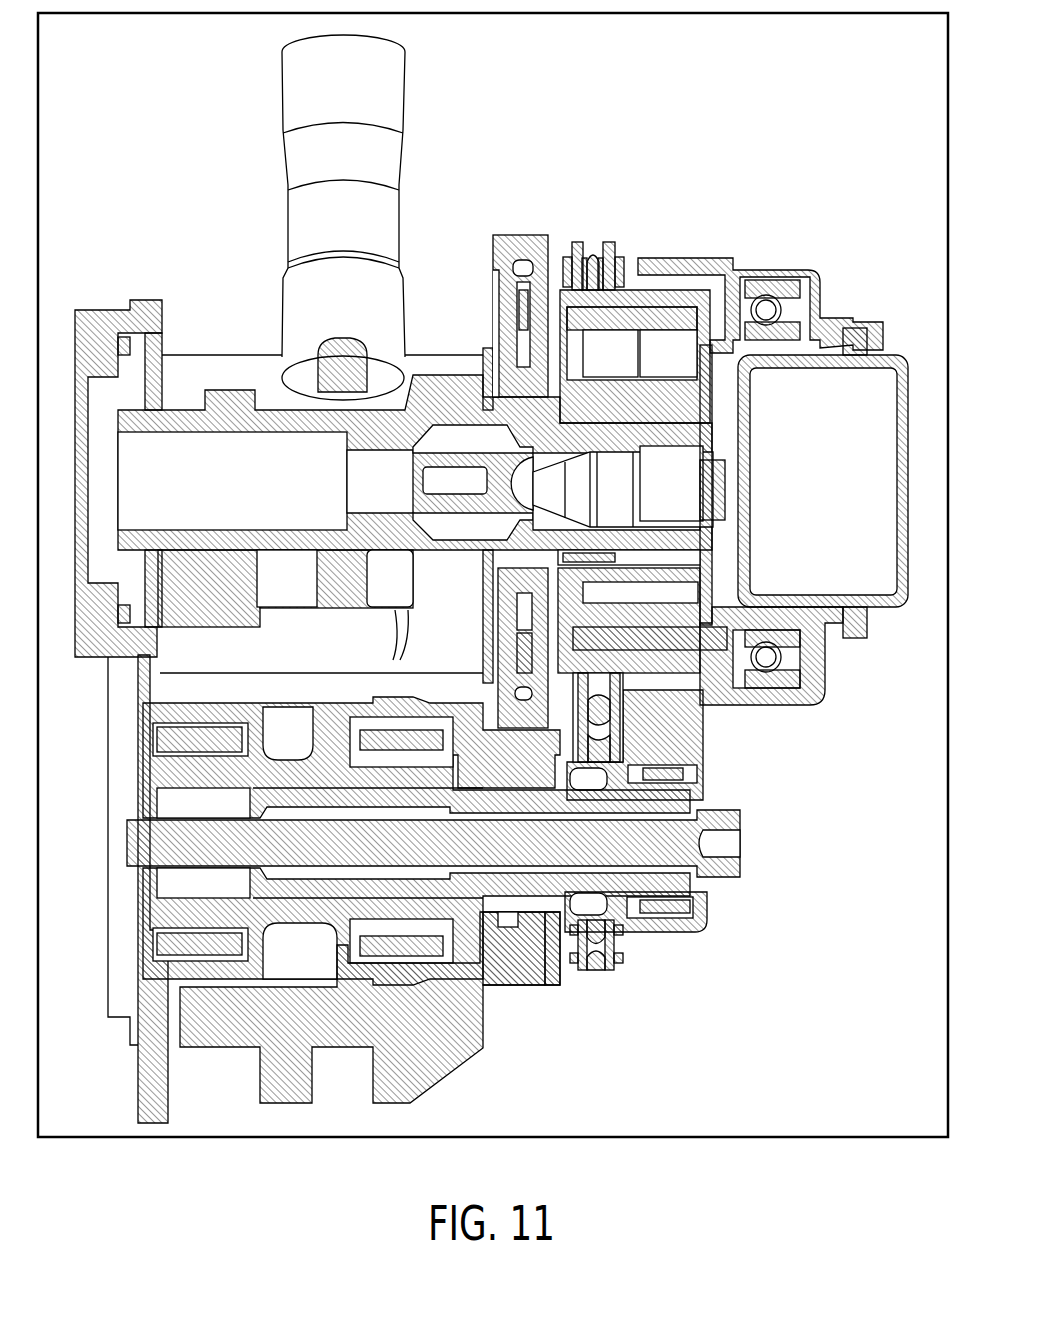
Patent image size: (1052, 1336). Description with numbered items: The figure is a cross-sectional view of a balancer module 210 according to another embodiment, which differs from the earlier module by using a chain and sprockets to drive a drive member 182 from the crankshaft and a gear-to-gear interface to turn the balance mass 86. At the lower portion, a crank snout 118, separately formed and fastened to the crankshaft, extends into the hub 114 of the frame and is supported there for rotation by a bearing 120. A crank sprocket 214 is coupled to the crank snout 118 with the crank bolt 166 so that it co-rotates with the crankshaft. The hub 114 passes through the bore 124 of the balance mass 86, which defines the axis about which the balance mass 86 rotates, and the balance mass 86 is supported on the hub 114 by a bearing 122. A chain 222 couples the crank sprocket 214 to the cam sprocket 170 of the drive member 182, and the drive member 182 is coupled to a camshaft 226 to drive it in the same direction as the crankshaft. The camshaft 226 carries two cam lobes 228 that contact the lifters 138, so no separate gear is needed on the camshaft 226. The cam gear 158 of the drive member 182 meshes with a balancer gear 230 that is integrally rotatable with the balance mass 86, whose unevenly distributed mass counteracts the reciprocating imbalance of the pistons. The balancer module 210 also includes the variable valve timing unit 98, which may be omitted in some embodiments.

The balancer module 210 is at (752, 104).
The lifters 138 is at (300, 104).
The drive member 182 is at (565, 241).
The cam gear 158 is at (493, 246).
The cam sprocket 170 is at (595, 250).
The chain 222 is at (617, 250).
The camshaft 226 is at (230, 398).
The cam lobes 228 is at (398, 410).
The variable valve timing unit 98 is at (908, 570).
The bearing 120 is at (183, 727).
The crank snout 118 is at (153, 768).
The bearing 122 is at (360, 732).
The crank bolt 166 is at (128, 835).
The crank sprocket 214 is at (618, 905).
The bore 124 is at (480, 945).
The balancer gear 230 is at (538, 965).
The balance mass 86 is at (432, 1072).
The hub 114 is at (160, 1087).